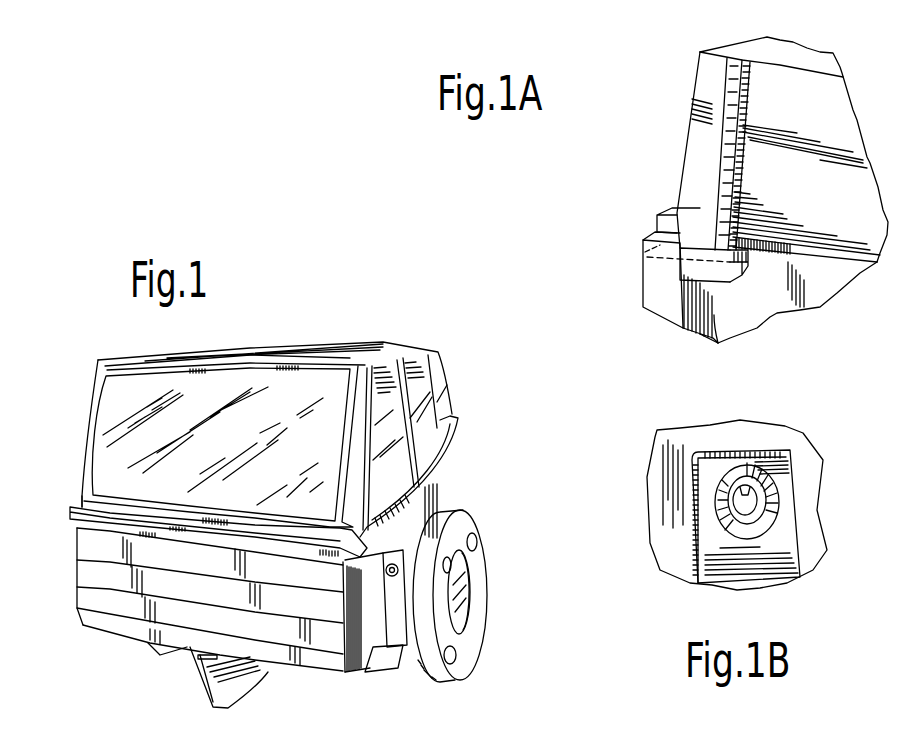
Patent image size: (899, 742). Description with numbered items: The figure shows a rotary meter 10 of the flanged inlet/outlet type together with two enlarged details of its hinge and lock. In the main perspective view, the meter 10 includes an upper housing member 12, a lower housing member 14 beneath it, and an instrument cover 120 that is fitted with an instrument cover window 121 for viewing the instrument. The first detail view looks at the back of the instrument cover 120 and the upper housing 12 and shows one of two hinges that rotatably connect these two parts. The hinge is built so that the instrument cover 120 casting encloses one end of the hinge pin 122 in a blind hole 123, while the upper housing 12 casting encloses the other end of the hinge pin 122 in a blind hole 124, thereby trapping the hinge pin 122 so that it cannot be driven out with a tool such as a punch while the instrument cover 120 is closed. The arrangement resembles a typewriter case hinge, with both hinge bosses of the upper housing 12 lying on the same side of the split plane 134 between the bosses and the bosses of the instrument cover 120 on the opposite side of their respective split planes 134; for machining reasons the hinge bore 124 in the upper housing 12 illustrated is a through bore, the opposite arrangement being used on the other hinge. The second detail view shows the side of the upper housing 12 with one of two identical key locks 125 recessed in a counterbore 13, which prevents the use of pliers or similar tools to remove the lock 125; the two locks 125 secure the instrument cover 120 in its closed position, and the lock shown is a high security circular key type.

In FIG. 1, the meter 10 is at (78, 552).
In FIG. 1, the upper housing member 12 is at (455, 486).
In FIG. 1A, the upper housing member 12 is at (657, 290).
In FIG. 1B, the counterbore 13 is at (773, 500).
In FIG. 1, the lower housing member 14 is at (397, 672).
In FIG. 1, the instrument cover 120 is at (400, 346).
In FIG. 1A, the instrument cover 120 is at (692, 99).
In FIG. 1, the instrument cover window 121 is at (288, 395).
In FIG. 1A, the hinge pin 122 is at (650, 235).
In FIG. 1A, the blind hole 123 is at (737, 276).
In FIG. 1A, the blind hole 124 is at (645, 238).
In FIG. 1B, the key lock 125 is at (790, 460).
In FIG. 1A, the split plane 134 is at (718, 343).